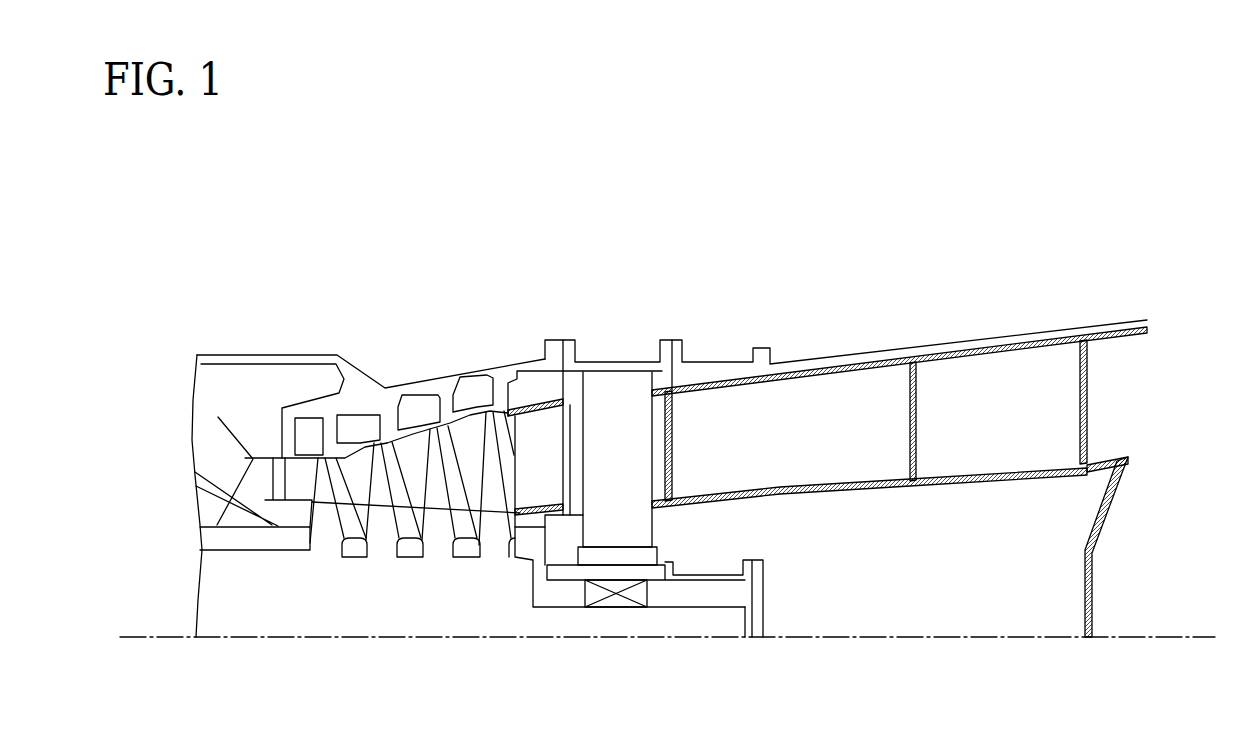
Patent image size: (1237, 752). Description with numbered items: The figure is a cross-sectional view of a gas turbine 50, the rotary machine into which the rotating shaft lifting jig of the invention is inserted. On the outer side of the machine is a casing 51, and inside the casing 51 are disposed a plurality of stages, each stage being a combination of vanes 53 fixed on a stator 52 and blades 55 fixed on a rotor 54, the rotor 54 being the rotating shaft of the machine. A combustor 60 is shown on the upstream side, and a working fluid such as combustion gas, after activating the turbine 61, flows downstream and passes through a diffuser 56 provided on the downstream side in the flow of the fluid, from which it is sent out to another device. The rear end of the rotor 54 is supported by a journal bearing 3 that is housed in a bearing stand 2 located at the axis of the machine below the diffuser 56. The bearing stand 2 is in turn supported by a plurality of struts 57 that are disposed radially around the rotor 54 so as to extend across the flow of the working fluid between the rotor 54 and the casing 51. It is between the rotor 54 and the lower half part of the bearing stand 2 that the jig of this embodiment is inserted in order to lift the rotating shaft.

The bearing stand 2 is at (655, 570).
The journal bearing 3 is at (613, 607).
The gas turbine 50 is at (342, 202).
The casing 51 is at (645, 362).
The stator 52 is at (391, 445).
The vanes 53 is at (470, 442).
The rotor 54 is at (537, 621).
The blades 55 is at (437, 497).
The diffuser 56 is at (975, 332).
The struts 57 is at (618, 395).
The combustor 60 is at (218, 410).
The turbine 61 is at (487, 297).